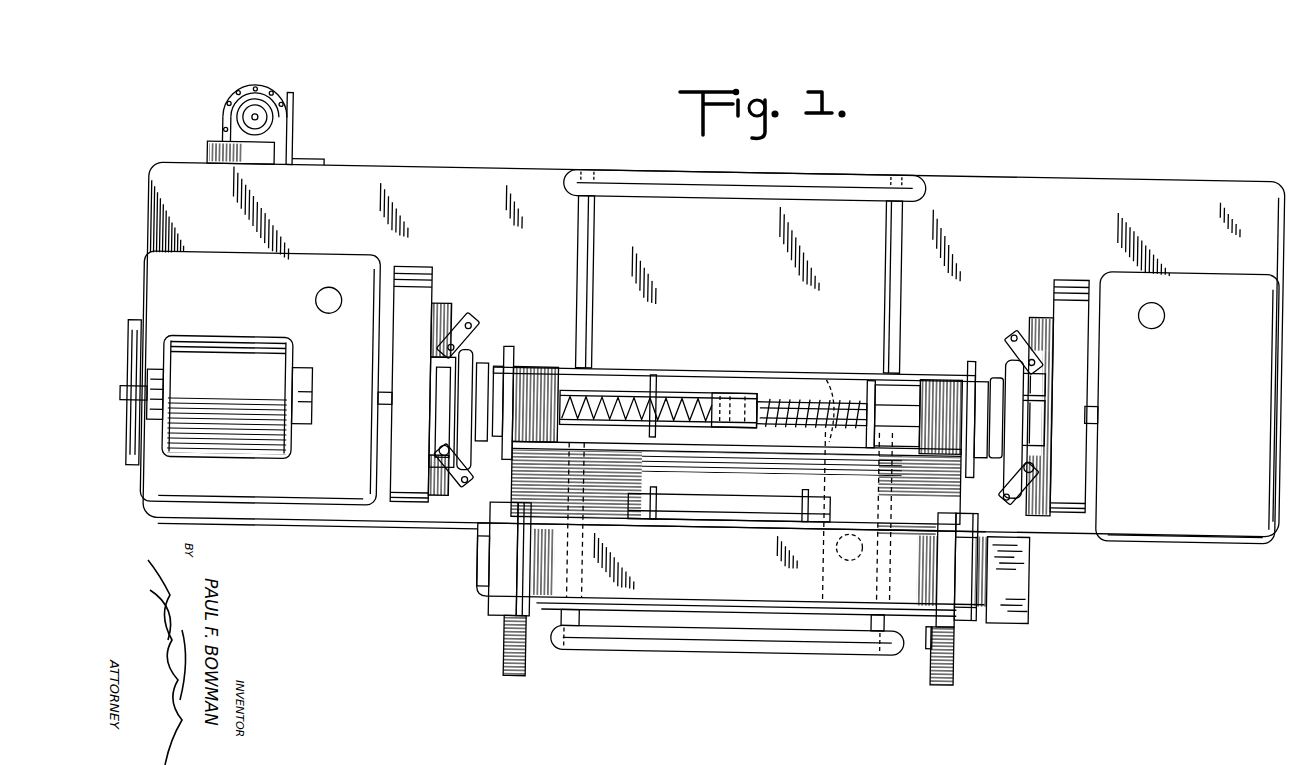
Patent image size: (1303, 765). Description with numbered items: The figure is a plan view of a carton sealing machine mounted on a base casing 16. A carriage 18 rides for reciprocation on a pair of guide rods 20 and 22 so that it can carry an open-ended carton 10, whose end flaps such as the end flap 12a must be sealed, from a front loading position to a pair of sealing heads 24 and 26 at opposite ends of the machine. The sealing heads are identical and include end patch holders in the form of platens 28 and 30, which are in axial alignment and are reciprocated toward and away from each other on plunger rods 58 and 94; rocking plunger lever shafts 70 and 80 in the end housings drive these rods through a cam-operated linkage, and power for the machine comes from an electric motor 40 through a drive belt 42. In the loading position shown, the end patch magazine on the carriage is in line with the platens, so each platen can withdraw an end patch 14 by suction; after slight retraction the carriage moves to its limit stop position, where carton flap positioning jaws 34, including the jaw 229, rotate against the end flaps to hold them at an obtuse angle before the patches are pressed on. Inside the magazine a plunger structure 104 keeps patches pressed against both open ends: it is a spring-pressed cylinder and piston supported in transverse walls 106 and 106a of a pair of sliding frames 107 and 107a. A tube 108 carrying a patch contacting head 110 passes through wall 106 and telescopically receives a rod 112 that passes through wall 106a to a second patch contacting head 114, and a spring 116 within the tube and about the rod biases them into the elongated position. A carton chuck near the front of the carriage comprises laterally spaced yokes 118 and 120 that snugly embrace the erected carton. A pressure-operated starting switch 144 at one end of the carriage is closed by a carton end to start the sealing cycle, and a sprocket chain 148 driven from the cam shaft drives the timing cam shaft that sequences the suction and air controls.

The carton 10 is at (742, 563).
The end flap 12a is at (480, 550).
The end patch 14 is at (536, 370).
The base casing 16 is at (378, 176).
The carriage 18 is at (610, 503).
The guide rod 20 is at (592, 240).
The guide rod 22 is at (884, 250).
The sealing head 24 is at (448, 266).
The sealing head 26 is at (1046, 271).
The platen 28 is at (483, 366).
The platen 30 is at (993, 373).
The carton flap positioning jaw 34 is at (458, 325).
The electric motor 40 is at (228, 392).
The drive belt 42 is at (133, 330).
The plunger rod 58 is at (384, 400).
The plunger lever shaft 70 is at (327, 306).
The second plunger lever shaft 80 is at (1163, 313).
The plunger rod 94 is at (1097, 403).
The plunger structure 104 is at (748, 403).
The transverse wall 106 is at (707, 393).
The sliding frame 107 is at (654, 378).
The tube 108 is at (740, 393).
The patch contacting head 110 is at (582, 376).
The rod 112 is at (786, 400).
The patch contacting head 114 is at (916, 378).
The spring 116 is at (808, 400).
The yoke 118 is at (963, 595).
The yoke 120 is at (500, 575).
The pressure-operated starting switch 144 is at (1022, 560).
The sprocket chain 148 is at (218, 110).
The jaw 229 is at (1012, 405).
The transverse wall 106a is at (868, 443).
The sliding frame 107a is at (893, 443).